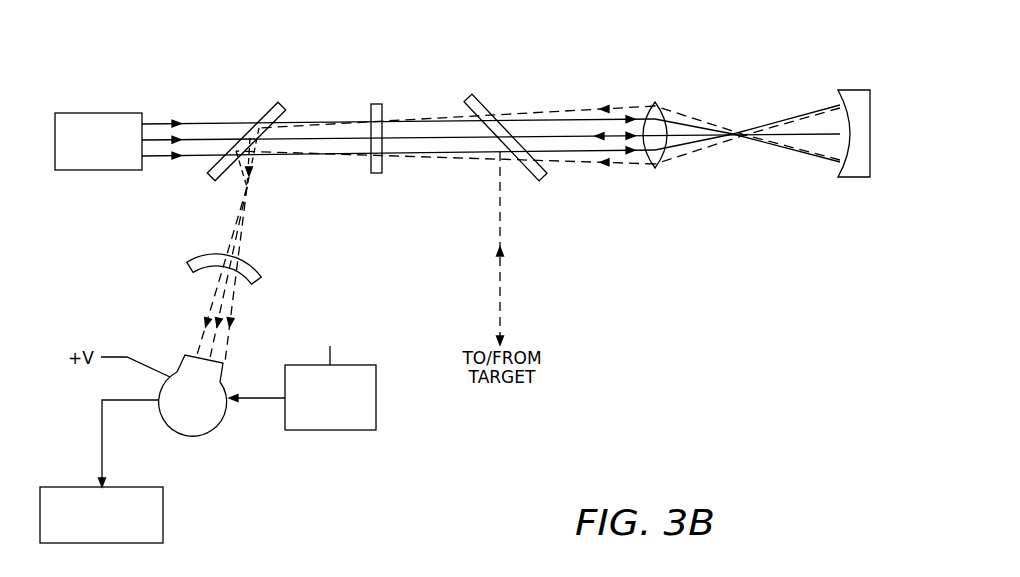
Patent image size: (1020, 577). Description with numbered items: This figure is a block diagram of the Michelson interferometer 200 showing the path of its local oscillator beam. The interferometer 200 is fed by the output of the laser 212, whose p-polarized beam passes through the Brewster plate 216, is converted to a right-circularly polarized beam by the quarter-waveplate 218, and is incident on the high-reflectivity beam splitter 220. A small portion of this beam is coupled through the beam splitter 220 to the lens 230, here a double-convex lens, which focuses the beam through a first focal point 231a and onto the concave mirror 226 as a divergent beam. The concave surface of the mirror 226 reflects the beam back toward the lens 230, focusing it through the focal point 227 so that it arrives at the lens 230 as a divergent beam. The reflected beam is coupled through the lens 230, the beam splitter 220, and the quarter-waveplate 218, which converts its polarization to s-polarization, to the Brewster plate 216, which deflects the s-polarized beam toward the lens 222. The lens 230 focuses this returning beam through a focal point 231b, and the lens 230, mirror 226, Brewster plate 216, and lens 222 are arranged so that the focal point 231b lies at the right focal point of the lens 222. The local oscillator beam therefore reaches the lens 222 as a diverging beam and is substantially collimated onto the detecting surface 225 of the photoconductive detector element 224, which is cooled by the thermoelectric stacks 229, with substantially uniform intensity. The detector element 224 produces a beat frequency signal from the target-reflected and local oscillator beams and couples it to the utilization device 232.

The Michelson interferometer 200 is at (199, 90).
The laser 212 is at (106, 113).
The Brewster plate 216 is at (268, 109).
The quarter-waveplate 218 is at (372, 104).
The high-reflectivity beam splitter 220 is at (473, 100).
The lens 222 is at (200, 260).
The detector element 224 is at (184, 438).
The detecting surface 225 is at (187, 356).
The concave mirror 226 is at (855, 90).
The focal point 227 is at (752, 140).
The thermoelectric stacks 229 is at (308, 430).
The lens 230 is at (656, 102).
The first focal point 231a is at (727, 130).
The focal point 231b is at (251, 186).
The utilization device 232 is at (164, 505).